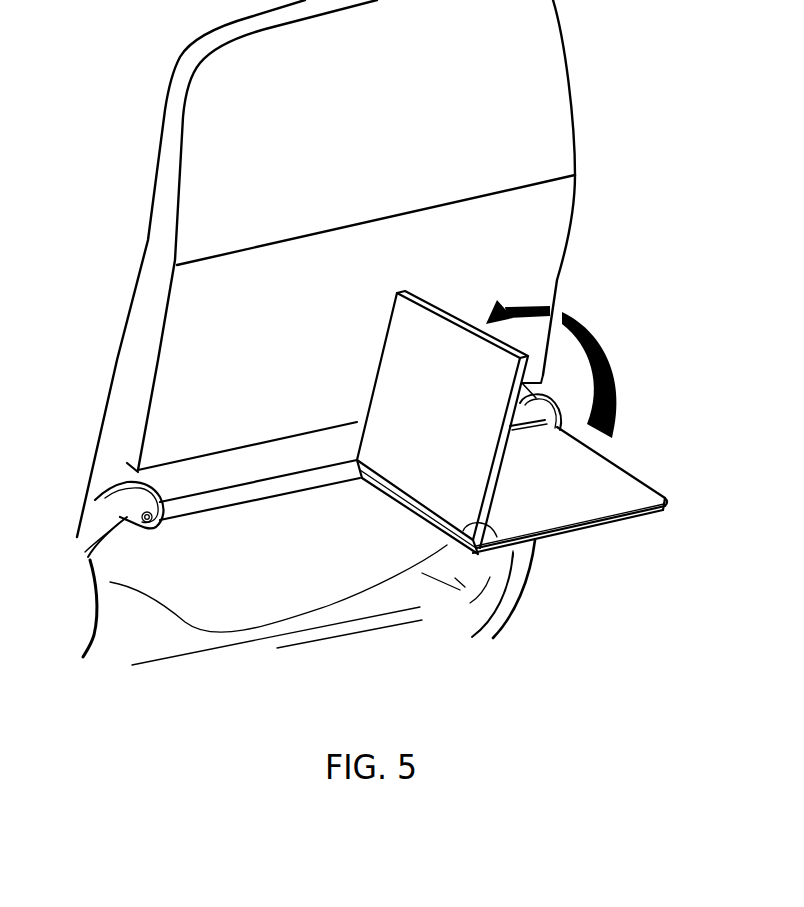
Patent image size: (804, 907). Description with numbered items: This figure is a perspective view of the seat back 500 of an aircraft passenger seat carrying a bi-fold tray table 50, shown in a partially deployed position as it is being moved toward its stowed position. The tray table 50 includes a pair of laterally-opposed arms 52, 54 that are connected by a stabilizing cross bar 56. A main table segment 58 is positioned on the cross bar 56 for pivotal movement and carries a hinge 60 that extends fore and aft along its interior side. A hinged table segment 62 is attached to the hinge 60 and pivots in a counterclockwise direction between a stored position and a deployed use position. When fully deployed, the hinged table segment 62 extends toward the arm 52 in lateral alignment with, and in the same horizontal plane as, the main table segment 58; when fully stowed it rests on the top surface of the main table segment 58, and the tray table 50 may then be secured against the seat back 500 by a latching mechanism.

The seat back 500 is at (113, 130).
The tray table 50 is at (359, 449).
The arm 52 is at (103, 512).
The arm 54 is at (542, 400).
The stabilizing cross bar 56 is at (200, 503).
The main table segment 58 is at (583, 493).
The hinge 60 is at (497, 538).
The hinged table segment 62 is at (430, 463).